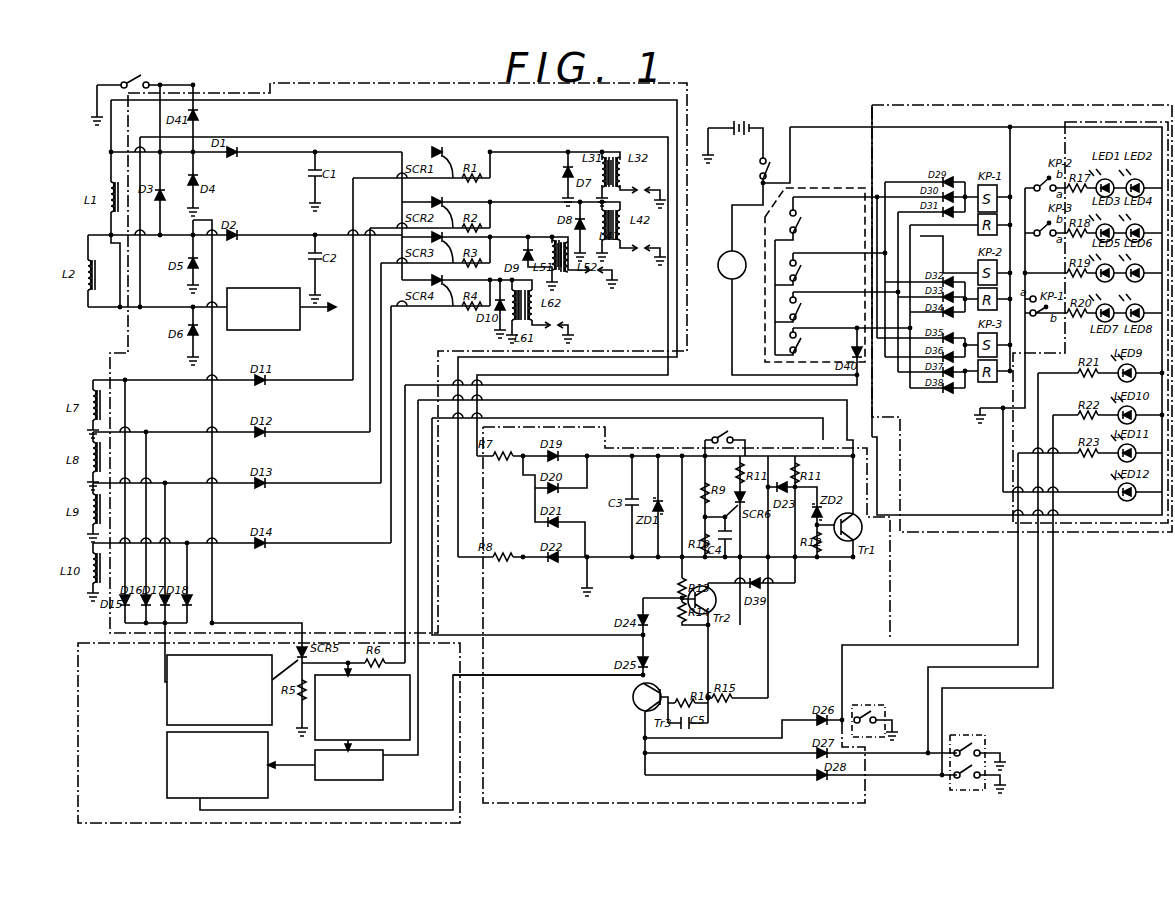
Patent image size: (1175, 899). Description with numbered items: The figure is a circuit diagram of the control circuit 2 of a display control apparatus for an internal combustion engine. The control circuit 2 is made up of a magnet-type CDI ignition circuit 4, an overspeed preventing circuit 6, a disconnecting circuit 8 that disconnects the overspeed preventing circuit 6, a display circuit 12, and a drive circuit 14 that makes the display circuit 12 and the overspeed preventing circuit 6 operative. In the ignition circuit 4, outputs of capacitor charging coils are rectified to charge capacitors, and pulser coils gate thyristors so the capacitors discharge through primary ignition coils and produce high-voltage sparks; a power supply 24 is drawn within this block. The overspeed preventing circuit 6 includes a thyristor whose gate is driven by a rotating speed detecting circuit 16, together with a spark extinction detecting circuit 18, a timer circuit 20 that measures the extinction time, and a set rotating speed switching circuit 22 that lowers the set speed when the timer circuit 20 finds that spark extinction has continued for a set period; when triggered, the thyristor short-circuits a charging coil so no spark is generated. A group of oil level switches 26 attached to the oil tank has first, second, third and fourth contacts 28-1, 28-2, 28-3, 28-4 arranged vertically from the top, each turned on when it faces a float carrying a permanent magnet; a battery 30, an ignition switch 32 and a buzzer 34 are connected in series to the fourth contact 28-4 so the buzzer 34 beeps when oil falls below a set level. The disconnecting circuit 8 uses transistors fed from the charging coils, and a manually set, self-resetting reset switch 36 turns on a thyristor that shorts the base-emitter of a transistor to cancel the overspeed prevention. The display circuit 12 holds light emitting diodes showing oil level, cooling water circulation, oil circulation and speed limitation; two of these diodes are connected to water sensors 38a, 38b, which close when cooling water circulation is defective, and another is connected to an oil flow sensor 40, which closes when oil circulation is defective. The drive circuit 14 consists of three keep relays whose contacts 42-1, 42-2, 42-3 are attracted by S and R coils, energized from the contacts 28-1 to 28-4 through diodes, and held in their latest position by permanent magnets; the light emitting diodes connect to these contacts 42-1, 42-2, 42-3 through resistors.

The control circuit 2 is at (1030, 104).
The CDI type ignition circuit 4 is at (128, 334).
The overspeed preventing circuit 6 is at (462, 812).
The disconnecting circuit 8 is at (867, 793).
The display circuit 12 is at (1110, 122).
The drive circuit 14 is at (961, 105).
The rotating speed detecting circuit 16 is at (167, 695).
The spark extinction detecting circuit 18 is at (410, 690).
The timer circuit 20 is at (385, 768).
The set rotating speed switching circuit 22 is at (167, 756).
The power supply 24 is at (267, 289).
The group of oil level switches 26 is at (803, 185).
The first contact 28-1 is at (800, 222).
The second contact 28-2 is at (800, 268).
The third contact 28-3 is at (800, 306).
The fourth contact 28-4 is at (800, 342).
The battery 30 is at (742, 118).
The ignition switch 32 is at (768, 154).
The buzzer 34 is at (722, 255).
The reset switch 36 is at (730, 436).
The water sensor 38a is at (975, 738).
The water sensor 38b is at (976, 784).
The oil flow sensor 40 is at (862, 708).
The keep relay contact 42-1 is at (1038, 321).
The keep relay contact 42-2 is at (1047, 177).
The keep relay contact 42-3 is at (1045, 263).